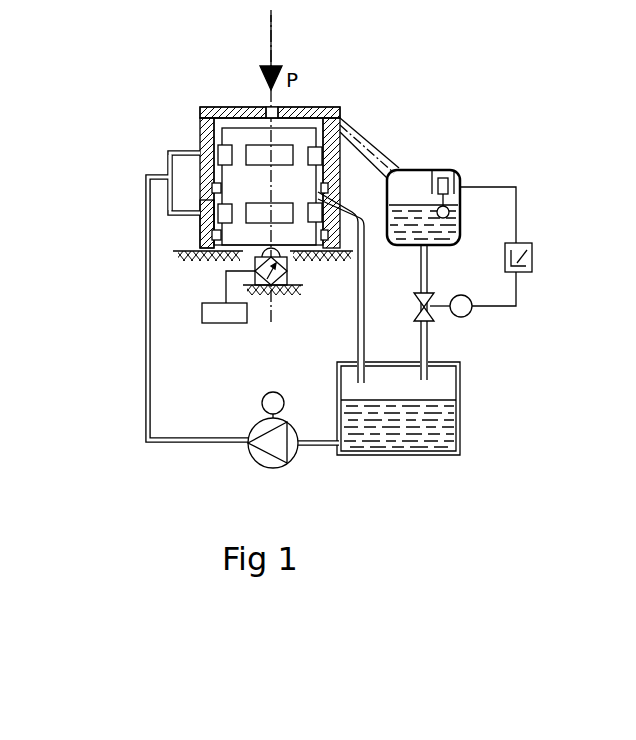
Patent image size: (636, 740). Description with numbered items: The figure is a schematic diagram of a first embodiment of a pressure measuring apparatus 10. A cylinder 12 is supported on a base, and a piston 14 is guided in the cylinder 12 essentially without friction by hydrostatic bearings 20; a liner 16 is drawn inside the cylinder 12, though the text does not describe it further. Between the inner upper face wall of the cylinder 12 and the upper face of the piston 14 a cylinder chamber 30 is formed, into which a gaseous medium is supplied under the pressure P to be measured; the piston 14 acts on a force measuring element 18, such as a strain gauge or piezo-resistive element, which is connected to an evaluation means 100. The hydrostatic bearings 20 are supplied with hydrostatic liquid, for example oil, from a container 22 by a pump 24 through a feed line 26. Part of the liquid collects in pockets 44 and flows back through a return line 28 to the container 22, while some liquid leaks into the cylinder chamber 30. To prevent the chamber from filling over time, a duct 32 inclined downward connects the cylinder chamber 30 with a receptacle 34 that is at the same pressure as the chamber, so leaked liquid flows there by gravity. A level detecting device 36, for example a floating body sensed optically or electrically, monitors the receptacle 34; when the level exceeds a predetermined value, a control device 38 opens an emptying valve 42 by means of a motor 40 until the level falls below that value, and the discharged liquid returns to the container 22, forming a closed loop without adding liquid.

The pressure measuring apparatus 10 is at (319, 61).
The cylinder 12 is at (249, 182).
The piston 14 is at (236, 243).
The liner insert 16 is at (228, 130).
The force measuring element 18 is at (288, 272).
The hydrostatic bearings 20 is at (308, 153).
The container 22 is at (459, 408).
The pump 24 is at (270, 452).
The feed line 26 is at (149, 393).
The return line 28 is at (357, 327).
The cylinder chamber 30 is at (338, 108).
The duct 32 is at (363, 150).
The receptacle 34 is at (408, 178).
The level detecting device 36 is at (447, 182).
The control device 38 is at (526, 258).
The motor 40 is at (461, 318).
The emptying valve 42 is at (416, 313).
The pockets 44 is at (312, 223).
The evaluation means 100 is at (228, 318).